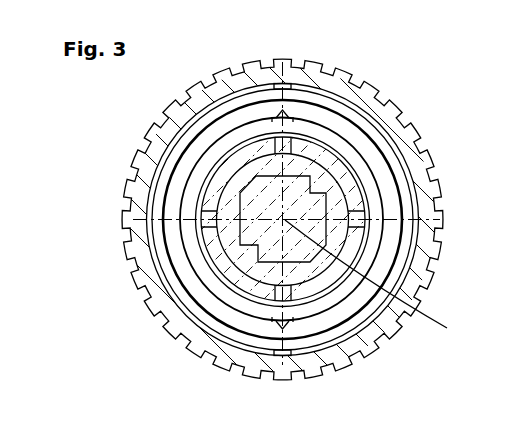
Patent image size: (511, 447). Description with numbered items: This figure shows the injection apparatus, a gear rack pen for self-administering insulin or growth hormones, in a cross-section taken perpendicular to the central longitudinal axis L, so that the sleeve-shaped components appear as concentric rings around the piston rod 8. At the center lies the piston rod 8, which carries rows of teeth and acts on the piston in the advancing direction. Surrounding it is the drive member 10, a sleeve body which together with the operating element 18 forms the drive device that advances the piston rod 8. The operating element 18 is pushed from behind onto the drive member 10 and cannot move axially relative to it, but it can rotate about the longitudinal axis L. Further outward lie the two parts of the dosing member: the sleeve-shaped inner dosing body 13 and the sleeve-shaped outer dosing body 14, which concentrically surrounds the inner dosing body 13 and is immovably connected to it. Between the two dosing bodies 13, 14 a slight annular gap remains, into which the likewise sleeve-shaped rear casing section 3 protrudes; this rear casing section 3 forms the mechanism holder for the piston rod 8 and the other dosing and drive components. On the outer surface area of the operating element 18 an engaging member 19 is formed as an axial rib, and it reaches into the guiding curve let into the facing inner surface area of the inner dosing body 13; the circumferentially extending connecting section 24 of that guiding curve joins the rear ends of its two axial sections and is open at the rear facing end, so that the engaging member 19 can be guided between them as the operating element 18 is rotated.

The rear casing section 3 is at (398, 165).
The piston rod 8 is at (252, 207).
The drive member 10 is at (227, 240).
The inner dosing body 13 is at (390, 193).
The outer dosing body 14 is at (423, 257).
The operating element 18 is at (218, 283).
The engaging member 19 is at (298, 322).
The connecting section 24 is at (258, 322).
The central longitudinal axis L is at (377, 286).